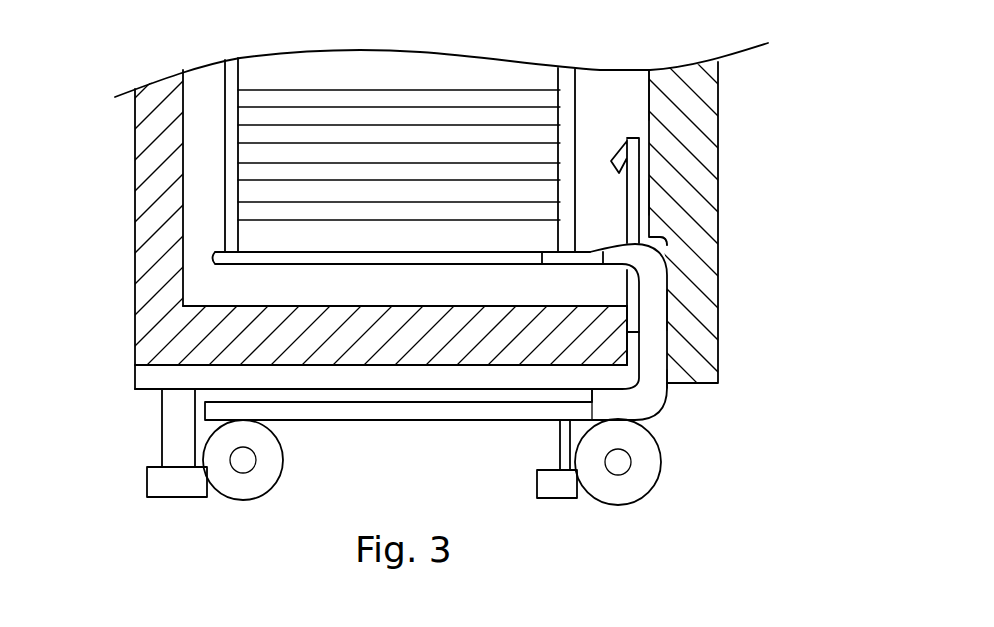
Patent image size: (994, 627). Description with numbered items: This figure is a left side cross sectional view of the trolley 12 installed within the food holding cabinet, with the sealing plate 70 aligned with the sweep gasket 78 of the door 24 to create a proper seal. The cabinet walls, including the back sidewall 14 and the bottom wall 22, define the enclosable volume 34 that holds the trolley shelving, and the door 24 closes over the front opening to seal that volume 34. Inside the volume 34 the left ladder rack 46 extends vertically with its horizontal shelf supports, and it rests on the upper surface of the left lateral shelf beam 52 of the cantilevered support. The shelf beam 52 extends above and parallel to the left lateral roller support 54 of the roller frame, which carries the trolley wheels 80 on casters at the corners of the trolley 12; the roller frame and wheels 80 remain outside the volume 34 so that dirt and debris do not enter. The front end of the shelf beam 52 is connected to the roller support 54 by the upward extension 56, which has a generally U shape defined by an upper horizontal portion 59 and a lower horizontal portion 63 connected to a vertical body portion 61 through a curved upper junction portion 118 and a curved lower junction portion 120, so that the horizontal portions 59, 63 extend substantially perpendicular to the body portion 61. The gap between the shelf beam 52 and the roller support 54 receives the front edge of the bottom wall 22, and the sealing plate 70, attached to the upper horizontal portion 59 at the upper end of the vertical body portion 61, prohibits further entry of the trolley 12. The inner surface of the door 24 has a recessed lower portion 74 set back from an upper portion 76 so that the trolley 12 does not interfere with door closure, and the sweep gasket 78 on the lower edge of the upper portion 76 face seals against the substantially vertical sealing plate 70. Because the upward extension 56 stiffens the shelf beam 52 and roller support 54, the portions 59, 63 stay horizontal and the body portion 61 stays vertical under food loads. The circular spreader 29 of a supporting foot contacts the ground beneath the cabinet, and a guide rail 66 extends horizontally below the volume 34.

The trolley 12 is at (540, 62).
The back sidewall 14 is at (133, 198).
The bottom wall 22 is at (428, 342).
The door 24 is at (703, 250).
The circular spreader 29 is at (168, 425).
The volume 34 is at (599, 73).
The left ladder rack 46 is at (233, 65).
The left lateral shelf beam 52 is at (258, 253).
The left lateral roller support 54 is at (348, 420).
The left upward extension 56 is at (653, 363).
The upper horizontal portion 59 is at (585, 257).
The vertical body portion 61 is at (645, 337).
The lower horizontal portion 63 is at (583, 412).
The guide rails 66 is at (153, 375).
The sealing plate 70 is at (626, 178).
The lower portion of the inner surface 74 is at (670, 308).
The upper portion of the inner surface 76 is at (653, 108).
The sweep gasket 78 is at (649, 198).
The trolley wheels 80 is at (262, 473).
The upper junction portion 118 is at (652, 262).
The lower junction portion 120 is at (650, 393).